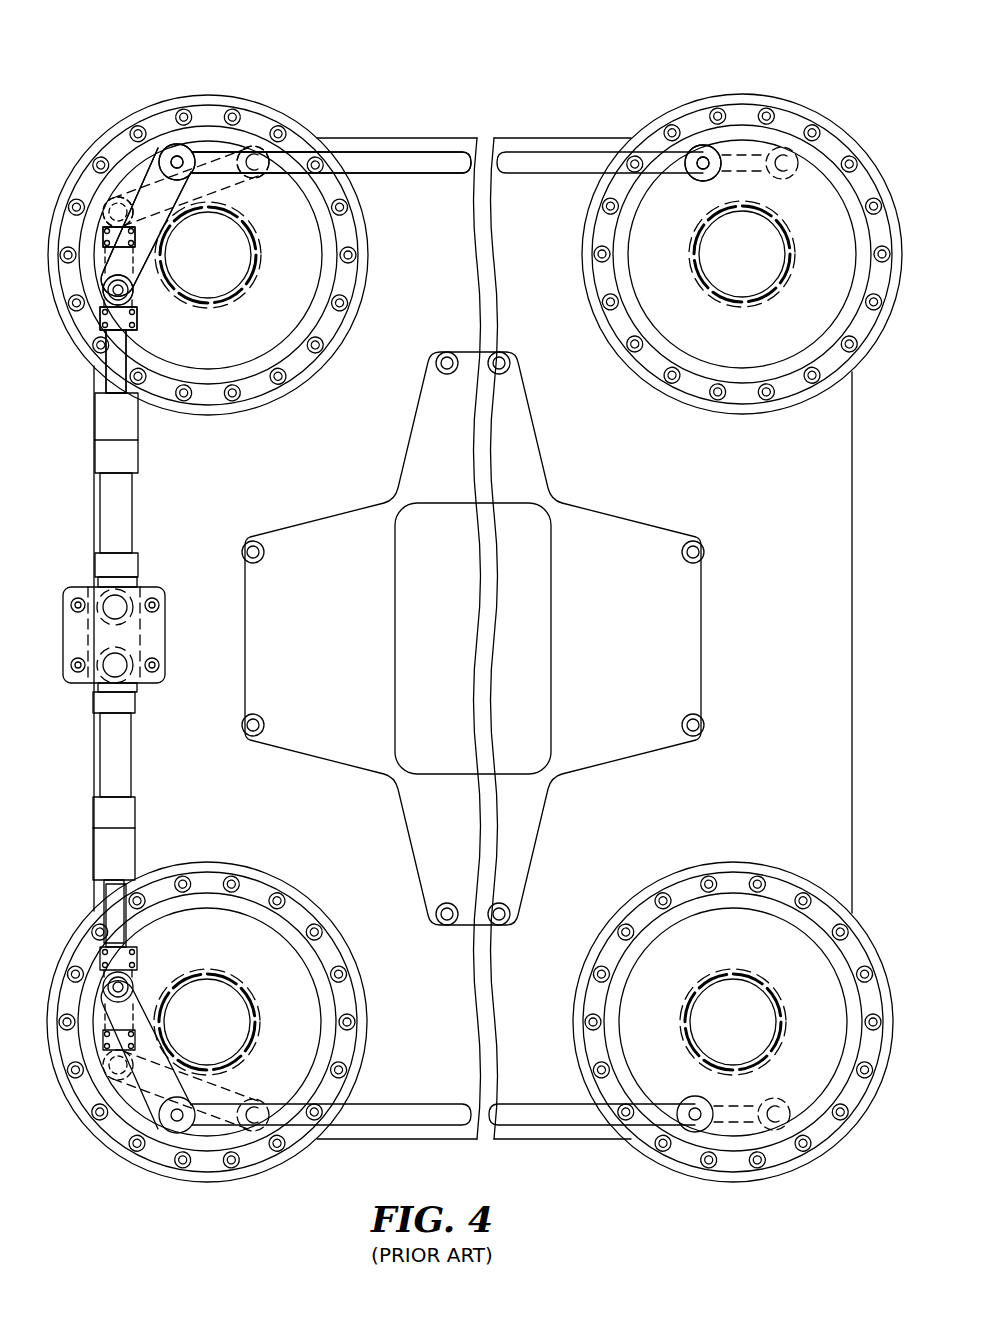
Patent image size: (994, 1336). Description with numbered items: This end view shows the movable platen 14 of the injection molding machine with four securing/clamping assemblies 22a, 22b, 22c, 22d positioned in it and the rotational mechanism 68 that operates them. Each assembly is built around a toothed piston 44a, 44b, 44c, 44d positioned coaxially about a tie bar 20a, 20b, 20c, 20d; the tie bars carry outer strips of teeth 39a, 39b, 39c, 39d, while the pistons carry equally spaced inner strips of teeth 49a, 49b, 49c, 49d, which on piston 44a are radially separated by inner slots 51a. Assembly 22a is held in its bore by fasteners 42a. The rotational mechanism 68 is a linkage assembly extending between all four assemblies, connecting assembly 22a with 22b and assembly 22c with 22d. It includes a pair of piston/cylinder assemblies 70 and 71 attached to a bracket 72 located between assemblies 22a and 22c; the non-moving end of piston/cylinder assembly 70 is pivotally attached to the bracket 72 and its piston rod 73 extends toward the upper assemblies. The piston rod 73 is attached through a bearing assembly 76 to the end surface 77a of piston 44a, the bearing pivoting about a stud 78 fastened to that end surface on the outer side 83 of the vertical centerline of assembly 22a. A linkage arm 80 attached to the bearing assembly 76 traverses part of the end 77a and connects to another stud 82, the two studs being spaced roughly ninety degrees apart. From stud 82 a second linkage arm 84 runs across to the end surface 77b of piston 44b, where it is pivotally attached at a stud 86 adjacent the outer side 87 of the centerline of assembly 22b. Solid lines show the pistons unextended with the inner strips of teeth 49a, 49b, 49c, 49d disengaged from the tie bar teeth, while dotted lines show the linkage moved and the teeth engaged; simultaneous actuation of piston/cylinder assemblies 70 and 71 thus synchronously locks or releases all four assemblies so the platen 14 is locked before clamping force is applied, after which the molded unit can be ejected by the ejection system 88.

The movable platen 14 is at (868, 748).
The tie bar 20a is at (232, 275).
The tie bar 20b is at (716, 249).
The tie bar 20c is at (182, 990).
The tie bar 20d is at (695, 1050).
The securing/clamping assembly 22a is at (262, 396).
The securing/clamping assembly 22b is at (648, 378).
The securing/clamping assembly 22c is at (260, 870).
The securing/clamping assembly 22d is at (672, 880).
The outer strips of teeth 39a is at (258, 222).
The outer strips of teeth 39b is at (786, 226).
The outer strips of teeth 39c is at (242, 980).
The outer strips of teeth 39d is at (756, 986).
The piston 44a is at (305, 318).
The piston 44b is at (690, 345).
The piston 44c is at (305, 1003).
The piston 44d is at (640, 995).
The inner strips of teeth 49a is at (262, 257).
The inner strips of teeth 49b is at (790, 268).
The inner strips of teeth 49c is at (258, 1030).
The inner strips of teeth 49d is at (777, 1040).
The end surface of piston 77a is at (318, 278).
The end surface of piston 77b is at (783, 345).
The fasteners 42a is at (256, 146).
The inner slots 51a is at (330, 172).
The second linkage arm 84 is at (407, 174).
The rotational mechanism 68 is at (121, 668).
The piston/cylinder assembly 70 is at (128, 522).
The piston/cylinder assembly 71 is at (128, 762).
The bracket 72 is at (168, 632).
The piston rod 73 is at (96, 383).
The bearing assembly 76 is at (98, 235).
The stud 78 is at (105, 203).
The linkage arm 80 is at (150, 190).
The stud 82 is at (177, 145).
The outer side of vertical centerline 83 is at (80, 103).
The stud 86 is at (704, 150).
The outer side of vertical centerline 87 is at (658, 93).
The ejection system 88 is at (530, 846).